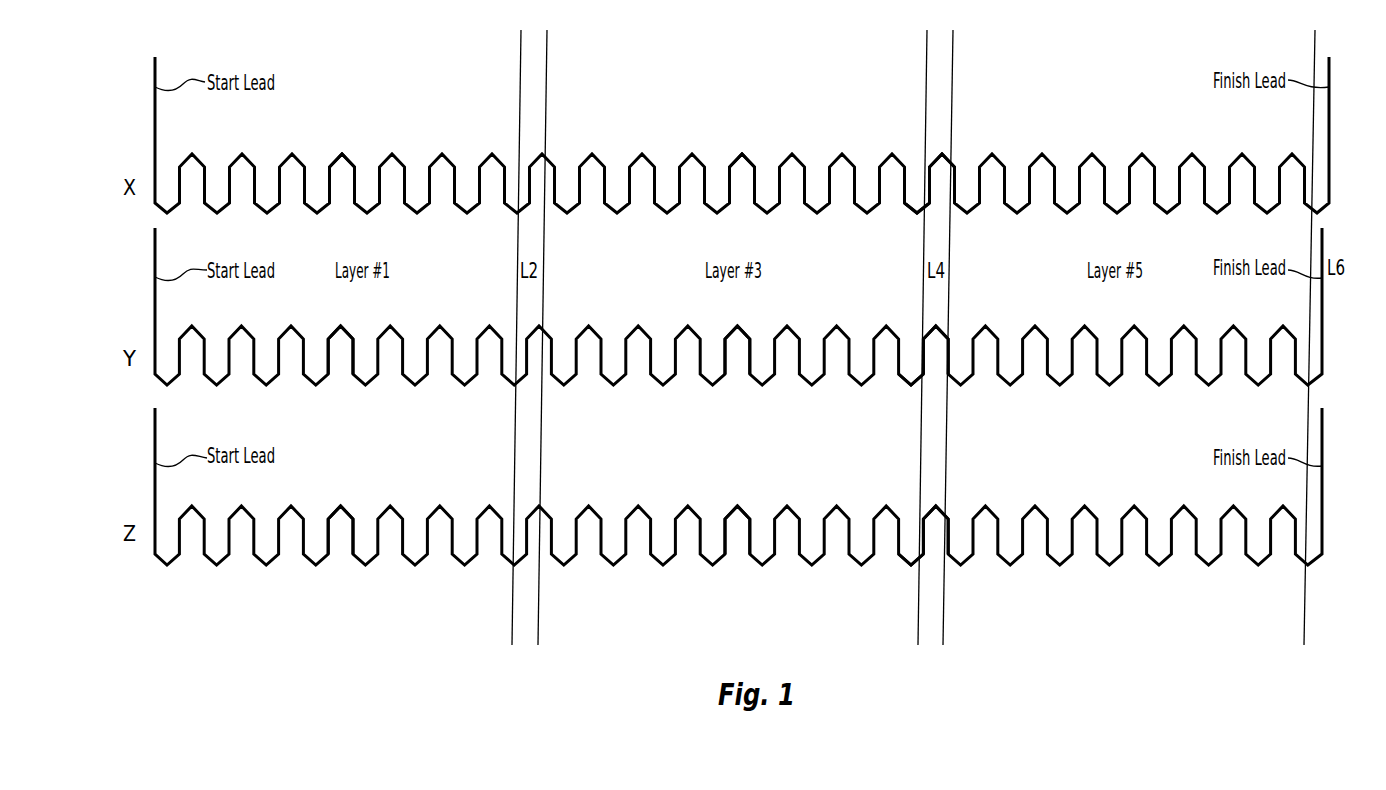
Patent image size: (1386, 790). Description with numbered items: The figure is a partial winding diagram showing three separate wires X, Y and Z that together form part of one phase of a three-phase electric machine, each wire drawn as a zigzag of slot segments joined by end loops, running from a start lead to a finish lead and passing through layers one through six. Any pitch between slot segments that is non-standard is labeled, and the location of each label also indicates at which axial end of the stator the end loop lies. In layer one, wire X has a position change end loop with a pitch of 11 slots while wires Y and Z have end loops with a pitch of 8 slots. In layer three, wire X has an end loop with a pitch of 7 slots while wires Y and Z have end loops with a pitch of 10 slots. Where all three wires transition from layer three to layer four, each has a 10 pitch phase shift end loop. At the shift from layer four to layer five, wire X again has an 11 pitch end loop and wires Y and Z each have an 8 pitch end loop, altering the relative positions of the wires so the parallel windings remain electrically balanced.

The position change end loop pitch of seven slots 7 is at (742, 178).
The position change end loop pitch of eight slots 8 is at (638, 440).
The ten pitch end loop 10 is at (827, 376).
The position change end loop pitch of eleven slots 11 is at (642, 178).